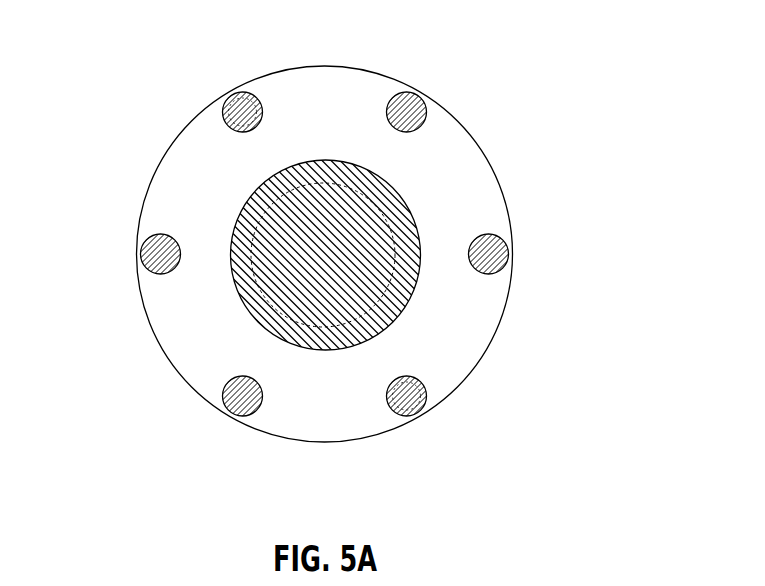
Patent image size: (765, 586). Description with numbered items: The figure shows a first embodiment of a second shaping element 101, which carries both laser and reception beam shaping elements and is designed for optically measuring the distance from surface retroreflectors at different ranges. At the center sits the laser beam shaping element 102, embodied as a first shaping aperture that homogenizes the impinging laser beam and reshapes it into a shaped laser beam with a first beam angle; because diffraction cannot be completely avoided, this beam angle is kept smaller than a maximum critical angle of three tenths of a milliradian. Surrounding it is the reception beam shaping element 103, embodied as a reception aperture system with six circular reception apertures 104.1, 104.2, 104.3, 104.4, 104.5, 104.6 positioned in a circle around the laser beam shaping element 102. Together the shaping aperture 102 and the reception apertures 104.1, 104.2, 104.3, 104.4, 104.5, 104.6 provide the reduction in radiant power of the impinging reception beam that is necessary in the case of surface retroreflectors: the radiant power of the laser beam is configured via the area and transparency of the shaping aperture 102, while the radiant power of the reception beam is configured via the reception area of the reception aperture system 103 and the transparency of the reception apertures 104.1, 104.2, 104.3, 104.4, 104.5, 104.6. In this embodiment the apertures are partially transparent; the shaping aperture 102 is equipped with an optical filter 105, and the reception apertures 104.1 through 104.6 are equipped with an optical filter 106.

The second shaping element 101 is at (349, 255).
The laser beam shaping element 102 is at (385, 222).
The reception beam shaping element 103 is at (183, 330).
The reception aperture 104.1 is at (508, 256).
The reception aperture 104.2 is at (406, 91).
The reception aperture 104.3 is at (241, 91).
The reception aperture 104.4 is at (141, 257).
The reception aperture 104.5 is at (244, 417).
The reception aperture 104.6 is at (407, 417).
The optical filter 105 is at (326, 352).
The optical filter 106 is at (250, 110).